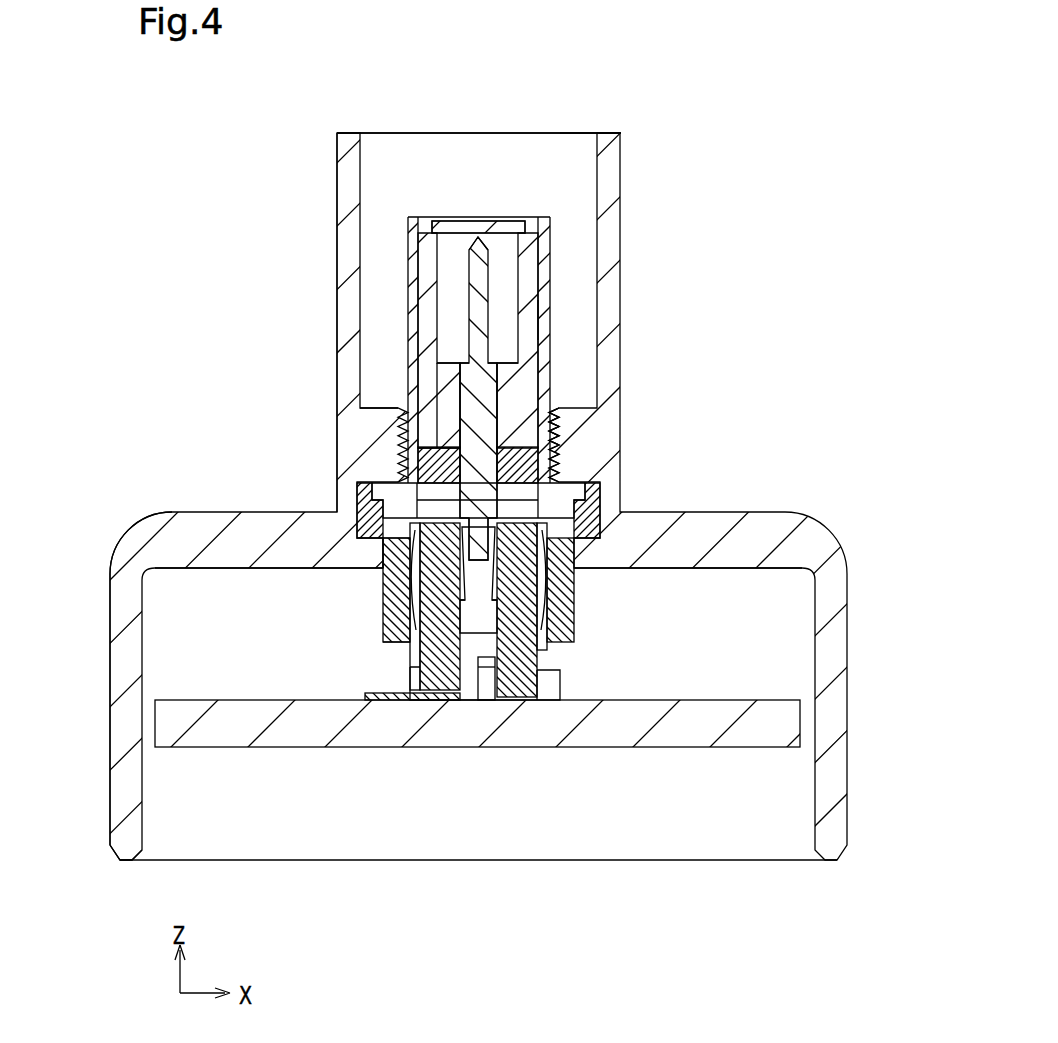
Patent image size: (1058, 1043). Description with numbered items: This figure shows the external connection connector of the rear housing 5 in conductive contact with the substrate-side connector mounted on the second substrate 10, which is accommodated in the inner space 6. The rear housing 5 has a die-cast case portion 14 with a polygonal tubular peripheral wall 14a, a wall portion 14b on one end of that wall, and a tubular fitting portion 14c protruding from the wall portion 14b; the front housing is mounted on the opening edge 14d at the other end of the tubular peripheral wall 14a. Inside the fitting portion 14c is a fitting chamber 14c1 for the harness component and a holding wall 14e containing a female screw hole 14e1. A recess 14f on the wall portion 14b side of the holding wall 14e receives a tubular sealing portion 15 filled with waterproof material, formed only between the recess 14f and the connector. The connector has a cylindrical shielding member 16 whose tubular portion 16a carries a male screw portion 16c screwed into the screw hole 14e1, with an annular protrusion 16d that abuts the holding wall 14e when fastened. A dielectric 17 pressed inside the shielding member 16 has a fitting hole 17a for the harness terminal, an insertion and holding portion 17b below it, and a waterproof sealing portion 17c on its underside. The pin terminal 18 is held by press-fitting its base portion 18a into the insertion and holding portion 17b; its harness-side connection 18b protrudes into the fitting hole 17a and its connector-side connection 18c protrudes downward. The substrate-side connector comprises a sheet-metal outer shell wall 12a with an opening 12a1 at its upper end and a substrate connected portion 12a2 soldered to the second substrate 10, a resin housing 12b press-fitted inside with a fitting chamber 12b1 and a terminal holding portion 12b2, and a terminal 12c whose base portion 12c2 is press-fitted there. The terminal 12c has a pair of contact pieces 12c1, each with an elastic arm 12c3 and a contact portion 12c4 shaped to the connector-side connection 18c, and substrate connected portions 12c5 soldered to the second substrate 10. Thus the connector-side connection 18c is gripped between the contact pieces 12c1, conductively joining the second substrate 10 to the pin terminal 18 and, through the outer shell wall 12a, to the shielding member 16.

The rear housing 5 is at (687, 146).
The inner space 6 is at (185, 600).
The second substrate 10 is at (185, 747).
The outer shell wall 12a is at (560, 690).
The opening 12a1 is at (420, 500).
The substrate connected portion 12a2 is at (540, 702).
The housing 12b is at (437, 700).
The fitting chamber 12b1 is at (385, 610).
The terminal holding portion 12b2 is at (400, 655).
The terminal 12c is at (470, 700).
The contact pieces 12c1 is at (410, 545).
The base portion 12c2 is at (505, 700).
The elastic arm 12c3 is at (560, 640).
The contact portion 12c4 is at (575, 600).
The substrate connected portions 12c5 is at (365, 695).
The case portion 14 is at (337, 193).
The tubular peripheral wall 14a is at (110, 690).
The wall portion 14b is at (175, 512).
The fitting portion 14c is at (337, 273).
The fitting chamber 14c1 is at (553, 150).
The opening edge 14d is at (122, 862).
The holding wall 14e is at (378, 405).
The screw hole 14e1 is at (562, 462).
The recess 14f is at (372, 560).
The sealing portion 15 is at (357, 494).
The shielding member 16 is at (600, 232).
The tubular portion 16a is at (548, 320).
The screw portion 16c is at (552, 432).
The protrusion 16d is at (425, 470).
The dielectric 17 is at (418, 268).
The fitting hole 17a is at (500, 262).
The insertion and holding portion 17b is at (440, 380).
The sealing portion 17c is at (420, 442).
The pin terminal 18 is at (493, 292).
The base portion 18a is at (490, 412).
The harness-side connection 18b is at (470, 230).
The connector-side connection 18c is at (598, 558).